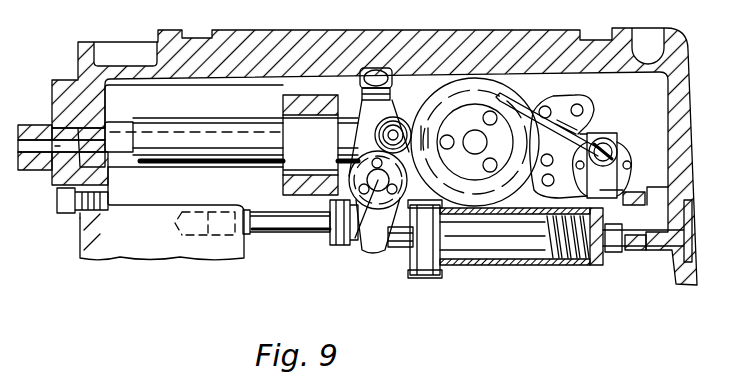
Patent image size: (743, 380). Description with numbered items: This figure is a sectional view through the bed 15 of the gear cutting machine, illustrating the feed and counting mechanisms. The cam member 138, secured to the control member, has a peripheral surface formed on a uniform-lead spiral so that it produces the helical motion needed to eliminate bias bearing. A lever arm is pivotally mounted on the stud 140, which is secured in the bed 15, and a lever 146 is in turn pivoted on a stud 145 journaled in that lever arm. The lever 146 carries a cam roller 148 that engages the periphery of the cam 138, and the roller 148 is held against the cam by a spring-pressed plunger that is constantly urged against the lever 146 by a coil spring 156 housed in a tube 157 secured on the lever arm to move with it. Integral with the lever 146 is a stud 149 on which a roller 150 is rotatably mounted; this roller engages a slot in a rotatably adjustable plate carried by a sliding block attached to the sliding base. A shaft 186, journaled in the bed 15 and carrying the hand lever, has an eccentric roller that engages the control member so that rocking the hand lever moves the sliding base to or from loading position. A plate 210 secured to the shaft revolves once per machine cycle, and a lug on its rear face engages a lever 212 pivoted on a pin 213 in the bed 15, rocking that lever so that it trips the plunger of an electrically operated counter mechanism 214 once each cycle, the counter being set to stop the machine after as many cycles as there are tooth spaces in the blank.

The bed 15 is at (687, 110).
The cam member 138 is at (438, 76).
The stud 140 is at (288, 232).
The stud 145 is at (348, 247).
The lever 146 is at (362, 78).
The cam roller 148 is at (406, 118).
The stud 149 is at (383, 58).
The roller 150 is at (392, 77).
The coil spring 156 is at (553, 265).
The tube 157 is at (478, 263).
The shaft 186 is at (52, 172).
The plate 210 is at (462, 88).
The lever 212 is at (522, 100).
The pin 213 is at (573, 100).
The counter mechanism 214 is at (622, 153).